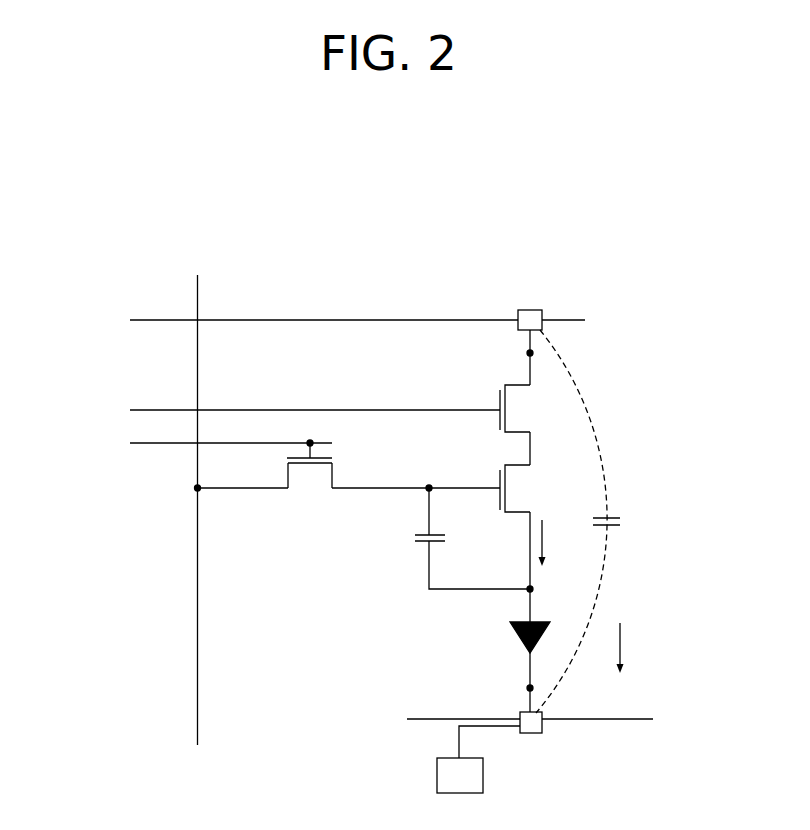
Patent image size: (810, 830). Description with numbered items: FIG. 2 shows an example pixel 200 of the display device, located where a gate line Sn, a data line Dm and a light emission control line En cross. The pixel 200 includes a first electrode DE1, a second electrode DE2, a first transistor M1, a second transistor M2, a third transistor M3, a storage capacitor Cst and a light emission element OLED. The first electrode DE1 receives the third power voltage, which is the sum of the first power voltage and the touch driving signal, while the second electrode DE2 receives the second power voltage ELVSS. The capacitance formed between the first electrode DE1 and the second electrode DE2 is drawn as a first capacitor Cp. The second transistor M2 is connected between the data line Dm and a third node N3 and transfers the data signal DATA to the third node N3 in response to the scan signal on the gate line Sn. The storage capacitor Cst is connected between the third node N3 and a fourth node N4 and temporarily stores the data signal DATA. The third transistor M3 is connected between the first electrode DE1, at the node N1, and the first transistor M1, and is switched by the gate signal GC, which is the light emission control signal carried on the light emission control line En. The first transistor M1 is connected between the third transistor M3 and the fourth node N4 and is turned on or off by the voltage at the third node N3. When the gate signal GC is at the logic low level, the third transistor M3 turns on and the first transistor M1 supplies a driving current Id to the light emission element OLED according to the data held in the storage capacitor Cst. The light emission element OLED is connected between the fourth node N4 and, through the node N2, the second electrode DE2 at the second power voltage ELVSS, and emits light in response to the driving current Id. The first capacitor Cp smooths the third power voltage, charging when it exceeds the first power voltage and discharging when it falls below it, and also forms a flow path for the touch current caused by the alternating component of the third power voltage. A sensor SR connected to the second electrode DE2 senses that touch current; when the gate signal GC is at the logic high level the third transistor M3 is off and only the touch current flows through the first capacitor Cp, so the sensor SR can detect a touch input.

The pixel 200 is at (373, 247).
The data signal DATA is at (194, 494).
The data line Dm is at (197, 290).
The first electrode DE1 is at (530, 305).
The first node N1 is at (515, 357).
The gate signal GC is at (297, 410).
The light emission control line En is at (157, 410).
The third transistor M3 is at (521, 408).
The first transistor M1 is at (521, 488).
The gate line Sn is at (158, 446).
The second transistor M2 is at (309, 471).
The third node N3 is at (428, 473).
The storage capacitor Cst is at (472, 538).
The fourth node N4 is at (546, 589).
The driving current Id is at (555, 543).
The light emission element OLED is at (501, 638).
The second node N2 is at (515, 693).
The second power voltage ELVSS is at (568, 719).
The second electrode DE2 is at (528, 739).
The sensor SR is at (478, 761).
The first capacitor Cp is at (596, 521).